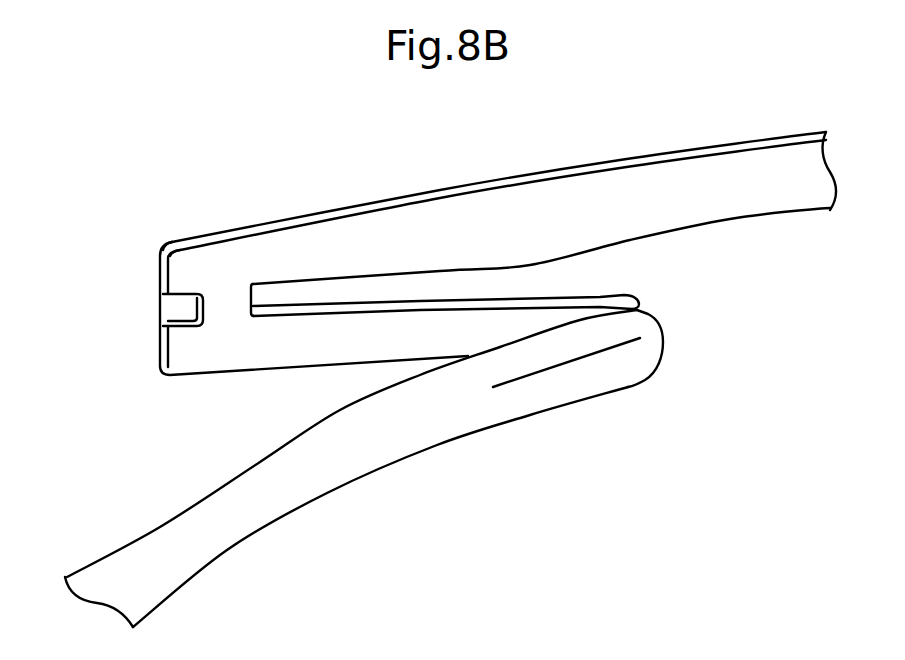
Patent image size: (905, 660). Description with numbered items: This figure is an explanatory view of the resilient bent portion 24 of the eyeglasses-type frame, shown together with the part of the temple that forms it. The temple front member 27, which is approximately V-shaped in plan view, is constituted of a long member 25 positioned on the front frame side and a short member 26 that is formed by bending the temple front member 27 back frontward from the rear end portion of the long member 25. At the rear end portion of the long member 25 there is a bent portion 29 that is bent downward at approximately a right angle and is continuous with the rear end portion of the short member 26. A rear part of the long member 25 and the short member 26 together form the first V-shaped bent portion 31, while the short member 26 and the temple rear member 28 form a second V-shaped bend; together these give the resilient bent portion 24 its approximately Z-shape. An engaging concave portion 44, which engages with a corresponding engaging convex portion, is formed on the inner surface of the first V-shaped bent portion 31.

The resilient bent portion 24 is at (567, 428).
The long member 25 is at (675, 178).
The short member 26 is at (323, 332).
The temple front member 27 is at (732, 130).
The temple rear member 28 is at (330, 475).
The bent portion 29 is at (205, 260).
The first V-shaped bent portion 31 is at (290, 200).
The engaging concave portion 44 is at (177, 311).